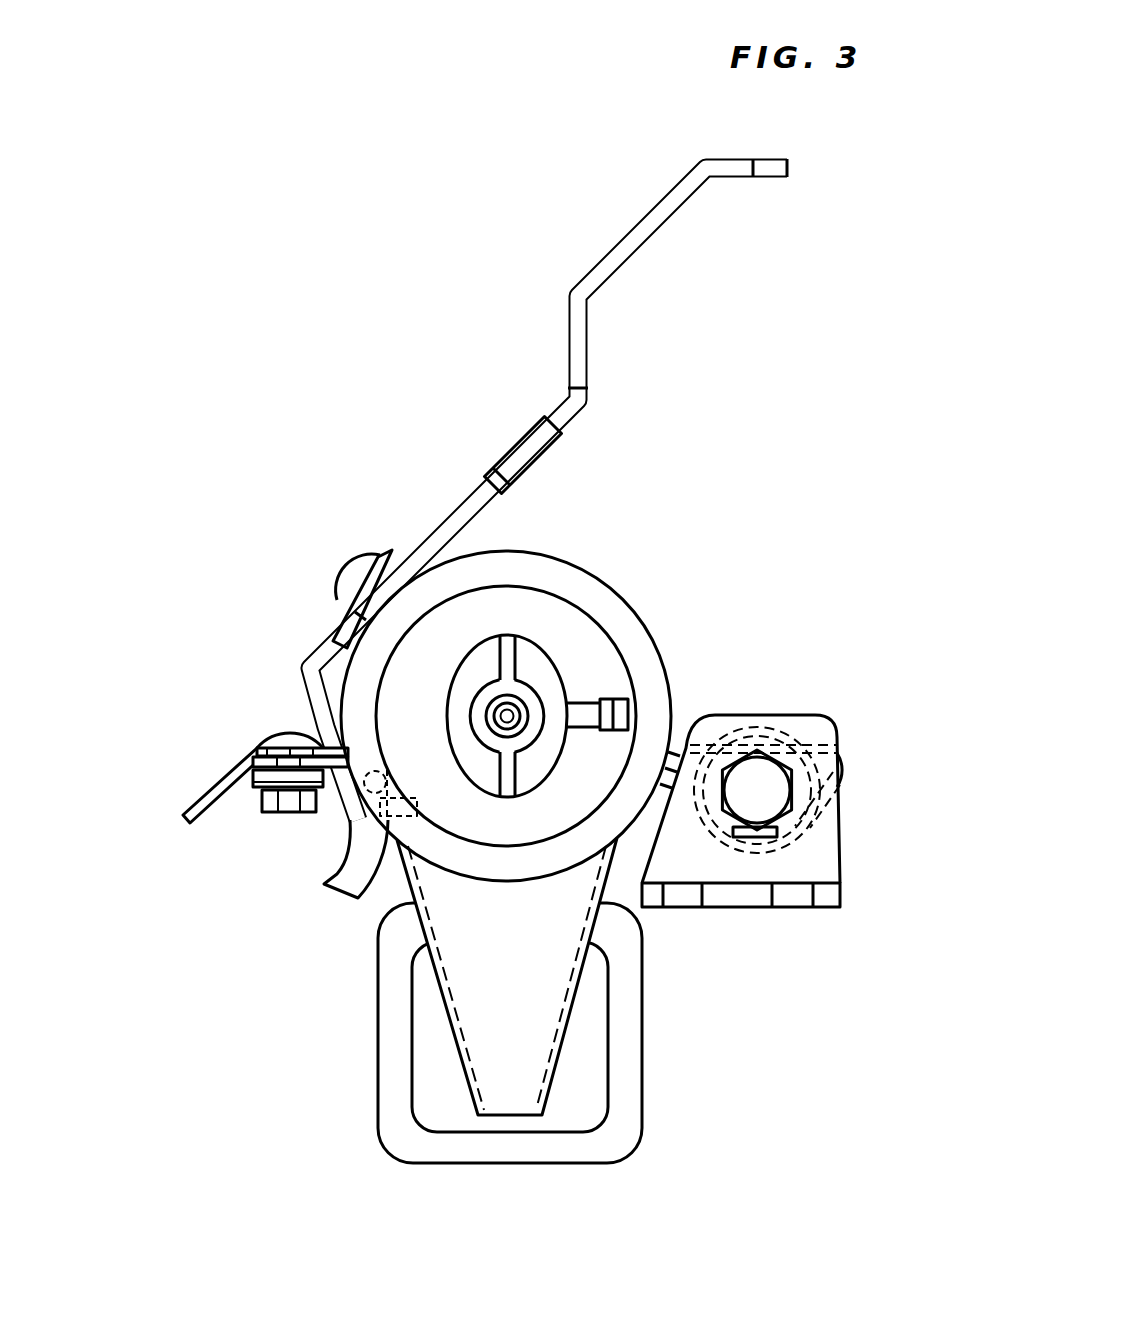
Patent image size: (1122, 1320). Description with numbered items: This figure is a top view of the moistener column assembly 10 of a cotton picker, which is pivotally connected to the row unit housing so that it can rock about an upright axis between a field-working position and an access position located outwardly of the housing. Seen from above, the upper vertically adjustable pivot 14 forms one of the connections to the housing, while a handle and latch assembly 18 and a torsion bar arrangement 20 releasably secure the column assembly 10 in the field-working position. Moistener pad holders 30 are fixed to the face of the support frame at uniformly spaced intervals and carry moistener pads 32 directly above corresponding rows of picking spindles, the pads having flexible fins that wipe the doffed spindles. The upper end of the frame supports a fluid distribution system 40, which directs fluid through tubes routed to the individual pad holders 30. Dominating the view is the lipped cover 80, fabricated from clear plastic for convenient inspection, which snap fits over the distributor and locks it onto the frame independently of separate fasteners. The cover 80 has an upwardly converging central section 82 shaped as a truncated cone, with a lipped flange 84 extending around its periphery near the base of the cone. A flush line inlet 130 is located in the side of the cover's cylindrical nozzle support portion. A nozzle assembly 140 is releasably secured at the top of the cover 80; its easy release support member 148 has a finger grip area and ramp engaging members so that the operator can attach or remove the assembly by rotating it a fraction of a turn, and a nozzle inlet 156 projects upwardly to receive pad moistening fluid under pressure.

The moistener column assembly 10 is at (272, 499).
The upper vertically adjustable pivot 14 is at (782, 698).
The handle and latch assembly 18 is at (560, 300).
The torsion bar arrangement 20 is at (338, 877).
The moistener pad holders 30 is at (533, 962).
The moistener pads 32 is at (642, 1037).
The fluid distribution system 40 is at (544, 671).
The lipped cover 80 is at (535, 566).
The central section 82 is at (580, 625).
The lipped flange 84 is at (635, 625).
The flush line inlet 130 is at (618, 698).
The nozzle assembly 140 is at (562, 645).
The easy release support member 148 is at (532, 667).
The nozzle inlet 156 is at (500, 719).